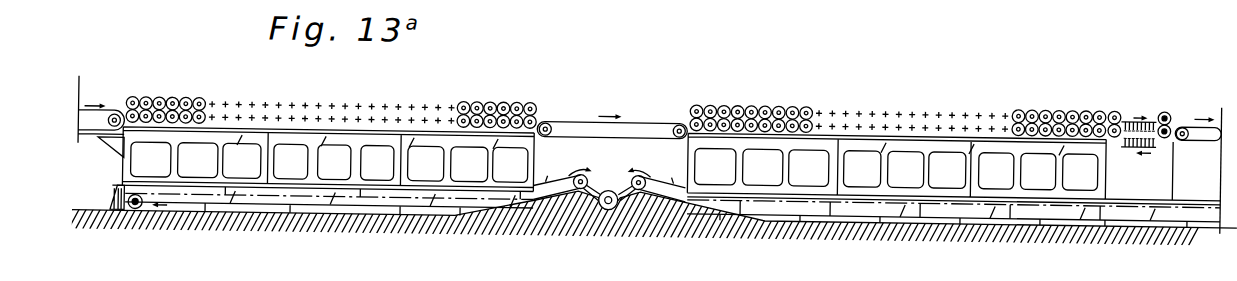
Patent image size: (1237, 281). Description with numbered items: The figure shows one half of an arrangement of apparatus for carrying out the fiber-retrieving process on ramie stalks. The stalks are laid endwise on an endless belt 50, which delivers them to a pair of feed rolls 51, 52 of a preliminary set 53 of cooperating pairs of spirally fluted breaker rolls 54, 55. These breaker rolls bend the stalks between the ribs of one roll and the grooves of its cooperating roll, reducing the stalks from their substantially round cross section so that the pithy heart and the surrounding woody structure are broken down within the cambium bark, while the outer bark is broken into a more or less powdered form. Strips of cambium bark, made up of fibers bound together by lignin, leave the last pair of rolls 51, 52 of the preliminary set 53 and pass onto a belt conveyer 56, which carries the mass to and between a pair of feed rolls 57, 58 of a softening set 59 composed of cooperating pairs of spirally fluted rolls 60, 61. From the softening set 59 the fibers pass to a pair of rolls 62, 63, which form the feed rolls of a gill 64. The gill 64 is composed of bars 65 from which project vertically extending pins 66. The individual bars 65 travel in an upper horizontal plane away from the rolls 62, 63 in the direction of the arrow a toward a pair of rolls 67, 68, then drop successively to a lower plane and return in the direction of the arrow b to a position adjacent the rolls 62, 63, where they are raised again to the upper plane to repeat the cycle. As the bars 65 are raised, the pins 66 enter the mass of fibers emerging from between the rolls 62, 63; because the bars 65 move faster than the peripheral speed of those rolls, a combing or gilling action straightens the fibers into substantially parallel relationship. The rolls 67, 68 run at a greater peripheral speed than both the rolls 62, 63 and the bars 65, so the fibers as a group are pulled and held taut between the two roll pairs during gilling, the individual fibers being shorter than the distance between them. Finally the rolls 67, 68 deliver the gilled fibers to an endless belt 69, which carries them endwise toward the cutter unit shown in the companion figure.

The endless belt 50 is at (113, 116).
The feed roll 51 is at (129, 99).
The feed roll 52 is at (133, 125).
The preliminary set 53 is at (125, 88).
The spirally fluted breaker roll 54 is at (199, 112).
The spirally fluted breaker roll 55 is at (197, 125).
The belt conveyer 56 is at (587, 116).
The feed roll 57 is at (692, 102).
The feed roll 58 is at (688, 117).
The softening set 59 is at (1105, 87).
The spirally fluted roll 60 is at (710, 102).
The spirally fluted roll 61 is at (712, 124).
The feed roll of gill 62 is at (1109, 101).
The feed roll of gill 63 is at (1117, 126).
The gill 64 is at (1170, 88).
The bar 65 is at (1143, 137).
The pin 66 is at (1126, 106).
The roll 67 is at (1170, 103).
The roll 68 is at (1173, 133).
The endless belt 69 is at (1213, 128).
The arrow a is at (1166, 100).
The arrow b is at (1142, 147).